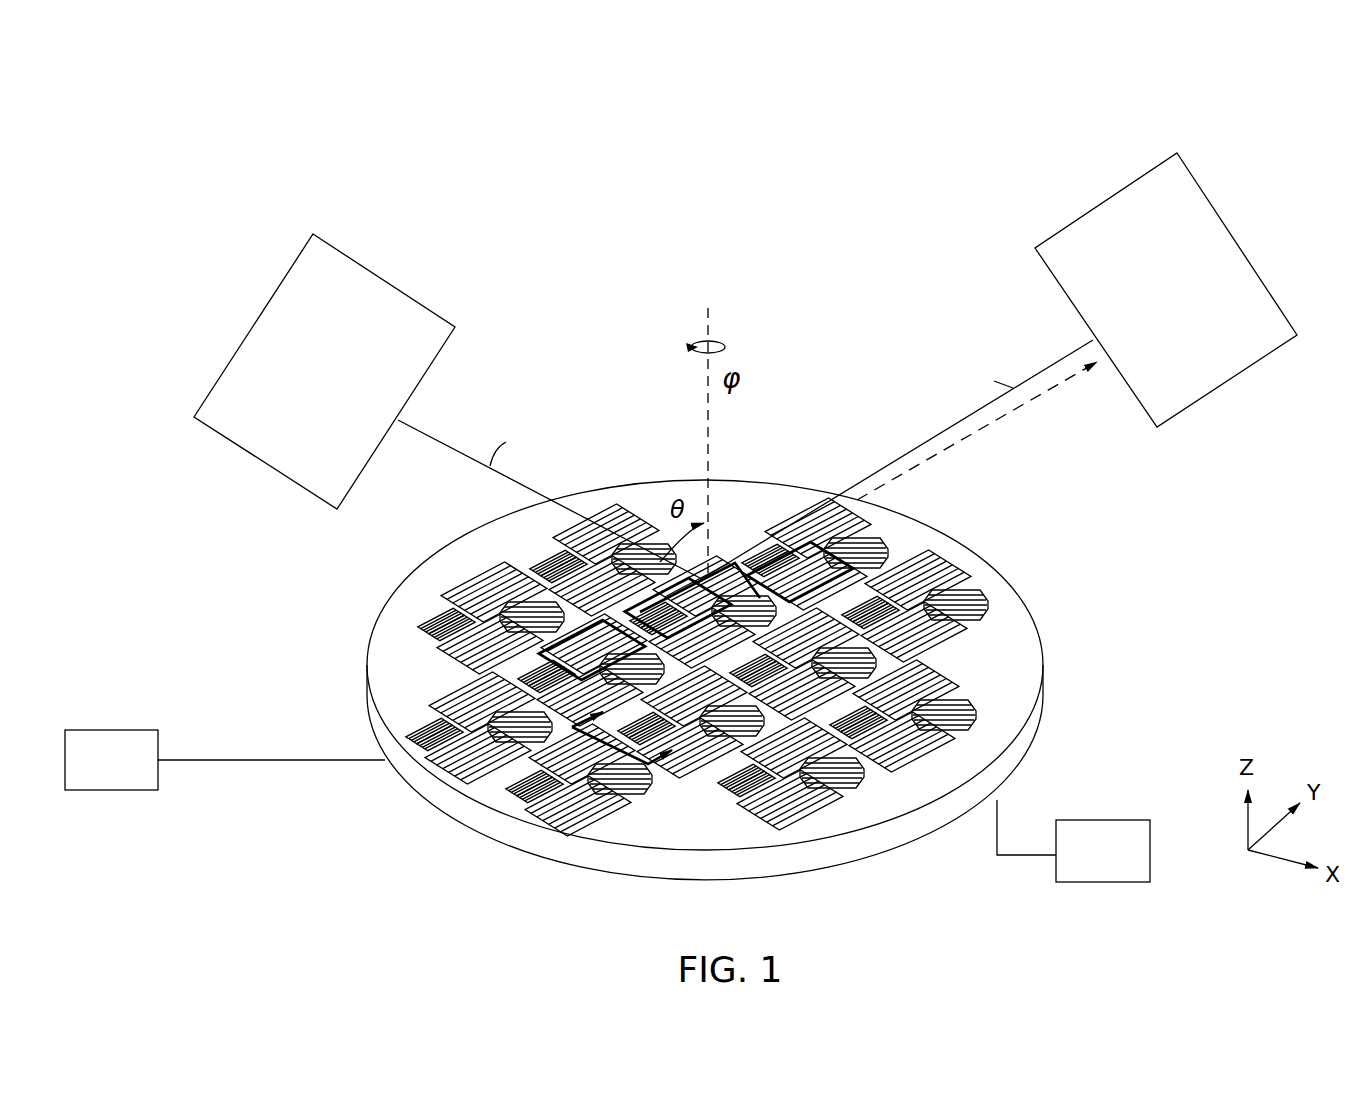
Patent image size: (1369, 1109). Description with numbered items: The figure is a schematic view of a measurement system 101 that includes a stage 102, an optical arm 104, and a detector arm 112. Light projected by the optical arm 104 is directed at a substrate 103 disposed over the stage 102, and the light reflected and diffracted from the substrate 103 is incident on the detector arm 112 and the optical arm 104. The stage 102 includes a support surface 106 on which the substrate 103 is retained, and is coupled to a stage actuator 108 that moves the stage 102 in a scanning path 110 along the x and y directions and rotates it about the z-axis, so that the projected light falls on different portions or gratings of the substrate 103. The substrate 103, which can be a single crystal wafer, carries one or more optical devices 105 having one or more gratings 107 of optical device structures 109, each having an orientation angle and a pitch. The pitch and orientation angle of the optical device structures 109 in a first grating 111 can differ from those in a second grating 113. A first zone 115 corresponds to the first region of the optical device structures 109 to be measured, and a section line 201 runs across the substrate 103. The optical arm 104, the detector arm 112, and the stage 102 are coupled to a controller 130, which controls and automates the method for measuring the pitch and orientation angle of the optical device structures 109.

The measurement system 101 is at (1068, 140).
The stage 102 is at (763, 680).
The substrate 103 is at (1035, 648).
The optical arm 104 is at (1183, 300).
The optical device 105 is at (973, 551).
The support surface 106 is at (1036, 712).
The grating 107 is at (982, 597).
The stage actuator 108 is at (1123, 865).
The optical device structures 109 is at (958, 567).
The scanning path 110 is at (966, 436).
The first grating 111 is at (773, 503).
The detector arm 112 is at (353, 386).
The second grating 113 is at (842, 486).
The first zone 115 is at (722, 616).
The controller 130 is at (131, 773).
The section line 201 is at (660, 757).